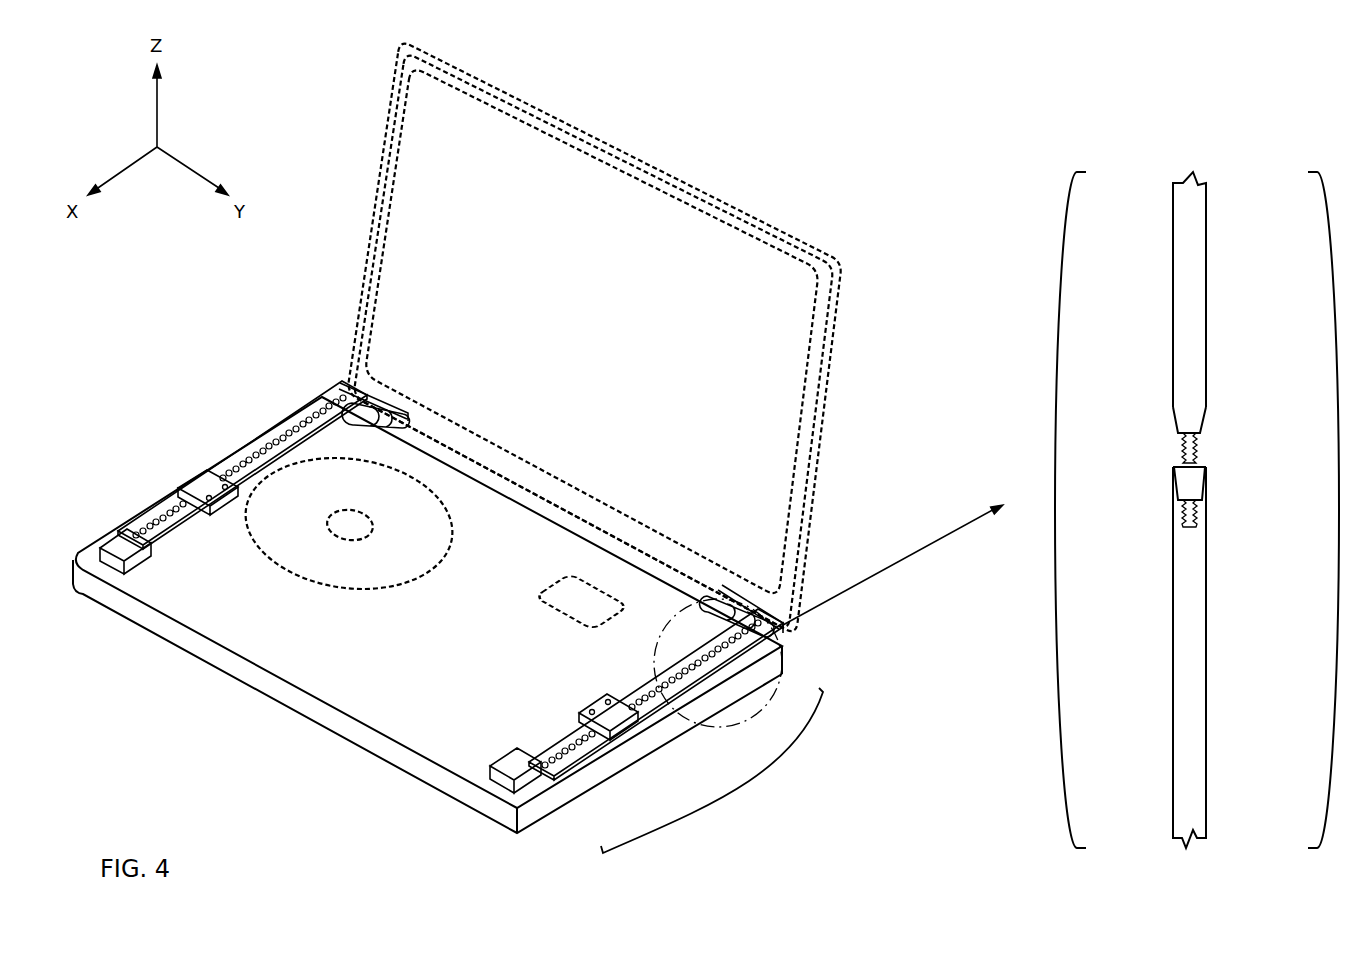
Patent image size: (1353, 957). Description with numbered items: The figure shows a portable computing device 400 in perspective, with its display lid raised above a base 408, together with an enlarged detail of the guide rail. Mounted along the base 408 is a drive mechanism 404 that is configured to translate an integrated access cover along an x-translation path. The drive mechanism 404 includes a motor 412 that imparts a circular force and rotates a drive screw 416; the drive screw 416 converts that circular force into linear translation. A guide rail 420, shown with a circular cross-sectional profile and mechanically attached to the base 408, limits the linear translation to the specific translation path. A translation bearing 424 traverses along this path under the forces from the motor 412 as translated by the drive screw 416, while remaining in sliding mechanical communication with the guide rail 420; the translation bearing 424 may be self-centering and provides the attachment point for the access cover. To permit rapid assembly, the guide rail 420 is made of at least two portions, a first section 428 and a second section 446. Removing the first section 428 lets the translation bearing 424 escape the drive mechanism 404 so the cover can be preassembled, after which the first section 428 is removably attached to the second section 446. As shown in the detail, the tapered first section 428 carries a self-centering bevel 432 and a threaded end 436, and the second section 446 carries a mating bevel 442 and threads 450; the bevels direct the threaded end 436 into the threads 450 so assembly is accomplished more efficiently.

The portable computing device 400 is at (787, 170).
The drive mechanism 404 is at (671, 618).
The base 408 is at (303, 716).
The motor 412 is at (117, 548).
The drive screw 416 is at (160, 514).
The guide rail 420 is at (272, 448).
The translation bearing 424 is at (203, 481).
The first section 428 is at (1207, 279).
The self-centering bevel 432 is at (1203, 420).
The threaded end 436 is at (1197, 447).
The mating bevel 442 is at (1206, 492).
The second section 446 is at (1207, 640).
The threads 450 is at (1198, 523).